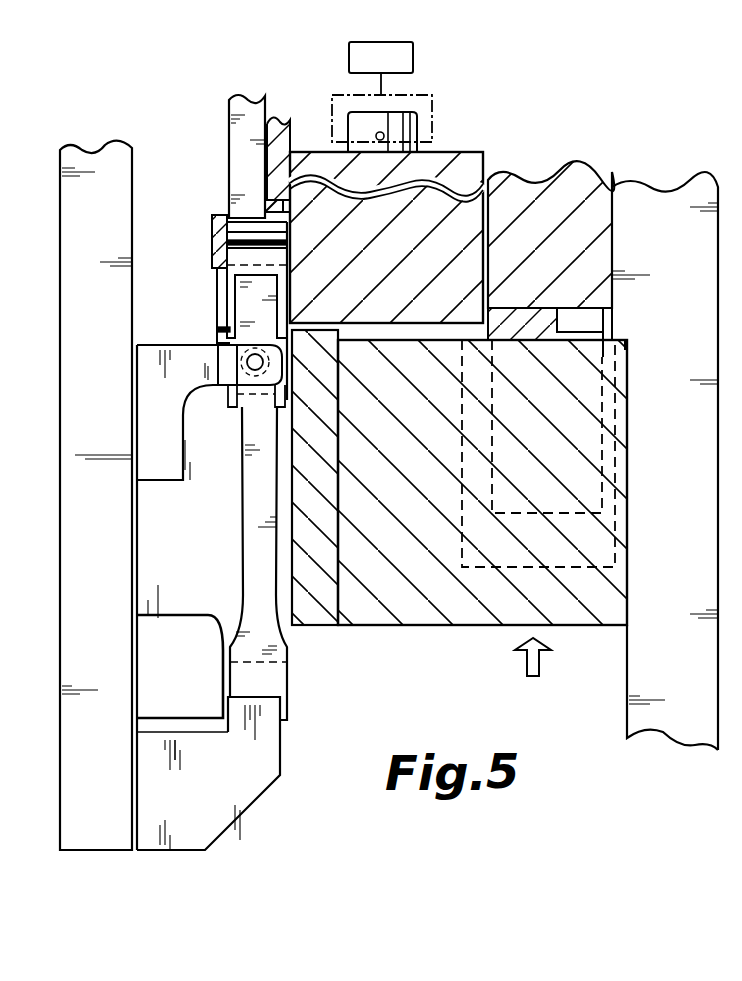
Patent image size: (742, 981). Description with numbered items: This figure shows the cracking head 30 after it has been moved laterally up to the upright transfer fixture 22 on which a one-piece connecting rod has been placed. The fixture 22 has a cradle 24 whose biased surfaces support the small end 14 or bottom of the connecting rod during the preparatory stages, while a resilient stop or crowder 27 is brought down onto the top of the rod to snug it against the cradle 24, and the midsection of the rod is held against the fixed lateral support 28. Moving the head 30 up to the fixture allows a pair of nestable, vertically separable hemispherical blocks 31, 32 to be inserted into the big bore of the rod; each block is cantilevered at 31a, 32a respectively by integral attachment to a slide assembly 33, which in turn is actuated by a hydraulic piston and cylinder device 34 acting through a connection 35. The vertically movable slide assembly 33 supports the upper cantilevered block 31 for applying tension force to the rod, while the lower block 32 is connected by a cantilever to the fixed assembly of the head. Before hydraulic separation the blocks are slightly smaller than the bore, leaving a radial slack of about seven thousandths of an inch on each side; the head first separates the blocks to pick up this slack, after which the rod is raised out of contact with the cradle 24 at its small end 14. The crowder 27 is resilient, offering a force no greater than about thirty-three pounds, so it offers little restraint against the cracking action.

The small end 14 is at (288, 678).
The transfer fixture 22 is at (118, 540).
The cradle 24 is at (268, 743).
The resilient stop (crowder) 27 is at (242, 130).
The lateral support 28 is at (217, 362).
The cracking head 30 is at (533, 684).
The hemispherical block 31 is at (218, 300).
The cantilever 31a is at (296, 272).
The hemispherical block 32 is at (216, 334).
The cantilever 32a is at (296, 345).
The slide assembly 33 is at (458, 165).
The hydraulic piston and cylinder device 34 is at (384, 68).
The connection 35 is at (447, 108).